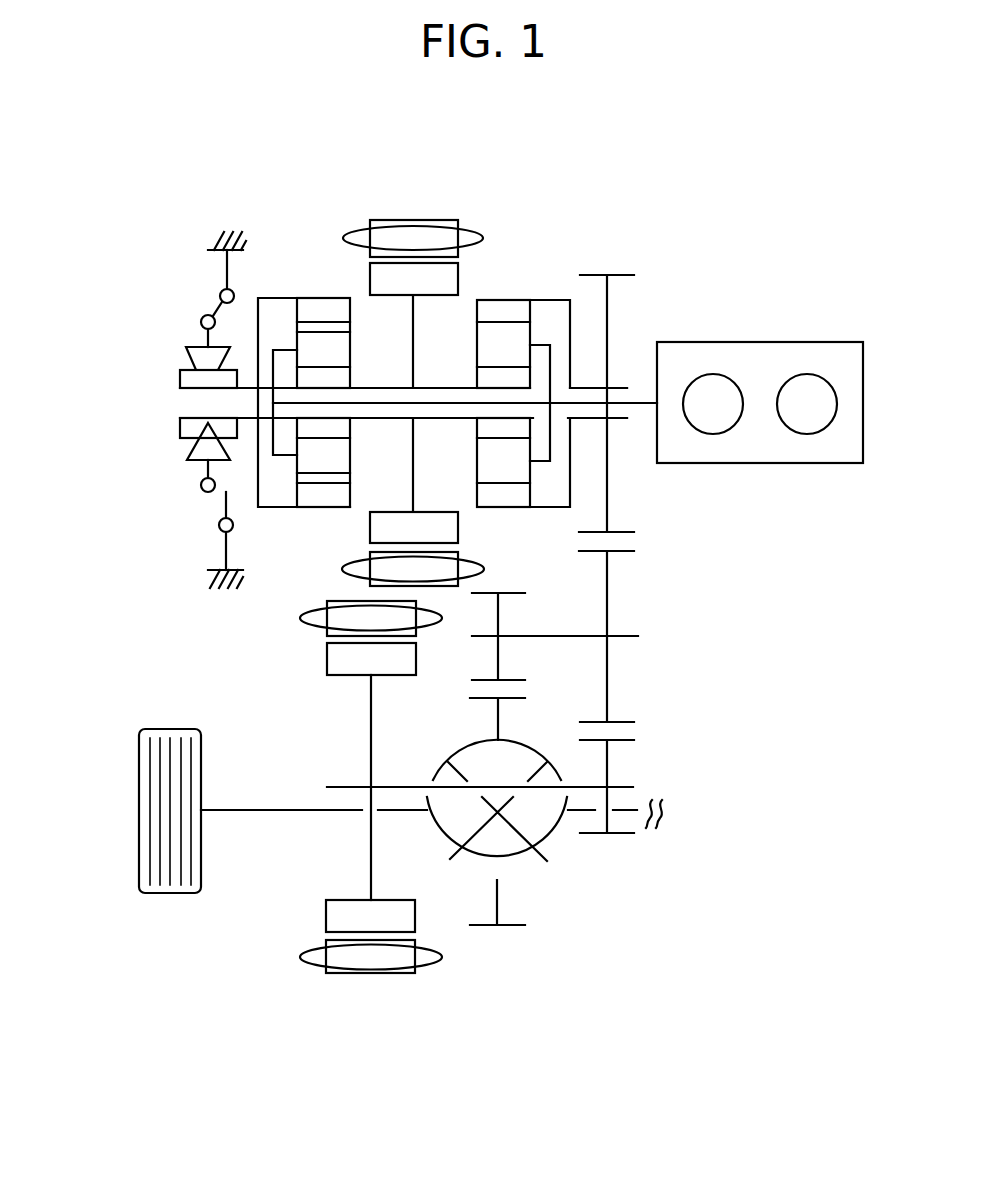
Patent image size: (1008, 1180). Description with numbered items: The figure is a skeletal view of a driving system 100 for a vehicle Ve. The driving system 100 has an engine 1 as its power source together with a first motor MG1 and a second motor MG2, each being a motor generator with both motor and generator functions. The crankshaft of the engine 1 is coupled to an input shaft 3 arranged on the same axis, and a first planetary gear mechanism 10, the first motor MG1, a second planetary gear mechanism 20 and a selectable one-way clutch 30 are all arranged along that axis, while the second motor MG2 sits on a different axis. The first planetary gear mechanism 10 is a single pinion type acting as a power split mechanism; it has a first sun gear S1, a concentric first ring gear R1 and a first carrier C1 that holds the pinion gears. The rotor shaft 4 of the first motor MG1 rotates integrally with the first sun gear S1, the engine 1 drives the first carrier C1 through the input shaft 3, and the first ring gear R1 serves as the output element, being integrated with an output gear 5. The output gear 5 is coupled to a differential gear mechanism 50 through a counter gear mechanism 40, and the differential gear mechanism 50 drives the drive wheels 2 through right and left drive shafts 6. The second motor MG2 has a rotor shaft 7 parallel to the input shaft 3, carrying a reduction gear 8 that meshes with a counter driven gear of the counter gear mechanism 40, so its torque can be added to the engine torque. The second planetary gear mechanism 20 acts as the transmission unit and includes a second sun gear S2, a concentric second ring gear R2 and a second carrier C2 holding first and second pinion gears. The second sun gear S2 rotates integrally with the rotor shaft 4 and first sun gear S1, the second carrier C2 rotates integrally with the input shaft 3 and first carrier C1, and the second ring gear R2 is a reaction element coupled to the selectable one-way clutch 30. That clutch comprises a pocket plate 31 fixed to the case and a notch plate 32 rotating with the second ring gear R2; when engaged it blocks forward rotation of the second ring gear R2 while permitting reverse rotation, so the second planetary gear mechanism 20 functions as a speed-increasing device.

The engine 1 is at (793, 342).
The drive wheel 2 is at (165, 894).
The input shaft 3 is at (643, 405).
The rotor shaft 4 is at (441, 388).
The output gear 5 is at (618, 531).
The drive shaft 6 is at (262, 812).
The rotor shaft 7 is at (398, 786).
The reduction gear 8 is at (617, 742).
The first planetary gear mechanism 10 is at (527, 350).
The second planetary gear mechanism 20 is at (328, 355).
The selectable one-way clutch 30 is at (182, 272).
The pocket plate 31 is at (226, 552).
The notch plate 32 is at (175, 437).
The counter gear mechanism 40 is at (656, 642).
The differential gear mechanism 50 is at (547, 866).
The driving system 100 is at (592, 170).
The first motor MG1 is at (410, 212).
The second motor MG2 is at (365, 982).
The first carrier C1 is at (540, 345).
The second carrier C2 is at (288, 350).
The first ring gear R1 is at (496, 312).
The second ring gear R2 is at (315, 308).
The first sun gear S1 is at (458, 448).
The second sun gear S2 is at (345, 378).
The vehicle Ve is at (754, 194).